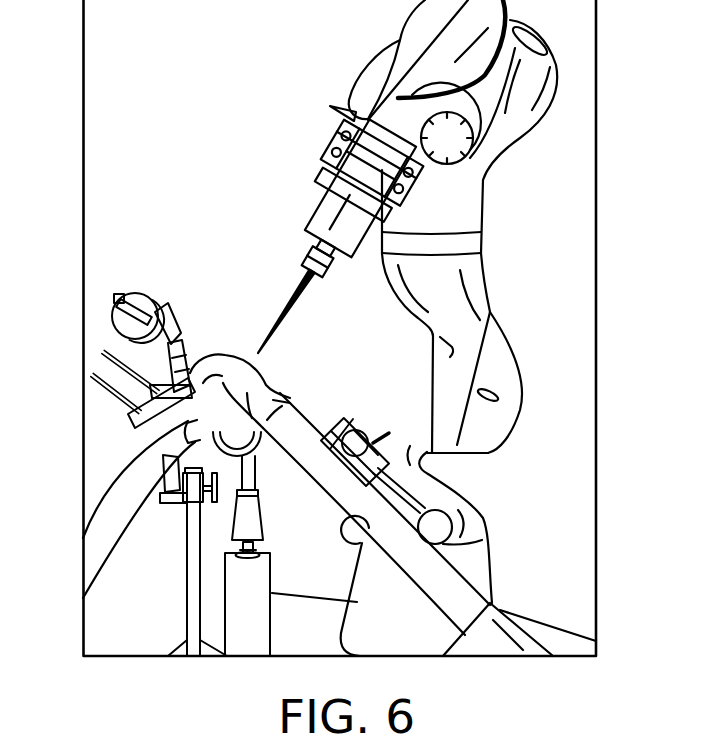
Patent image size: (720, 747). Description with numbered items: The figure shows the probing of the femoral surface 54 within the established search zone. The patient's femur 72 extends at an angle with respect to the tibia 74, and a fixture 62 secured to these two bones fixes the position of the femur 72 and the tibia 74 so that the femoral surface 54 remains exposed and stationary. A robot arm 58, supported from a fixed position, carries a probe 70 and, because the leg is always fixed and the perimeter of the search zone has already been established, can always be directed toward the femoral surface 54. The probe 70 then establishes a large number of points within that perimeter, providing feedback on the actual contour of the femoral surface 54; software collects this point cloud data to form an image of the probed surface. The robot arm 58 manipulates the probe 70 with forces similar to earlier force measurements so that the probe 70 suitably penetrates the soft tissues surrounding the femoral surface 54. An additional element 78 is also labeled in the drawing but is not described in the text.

The clamp bracket 54 is at (148, 403).
The end effector coupling 58 is at (440, 183).
The dial indicator 62 is at (113, 333).
The tool 70 is at (272, 336).
The left frame leg 72 is at (107, 502).
The right frame leg 74 is at (440, 594).
The component 78 is at (185, 746).